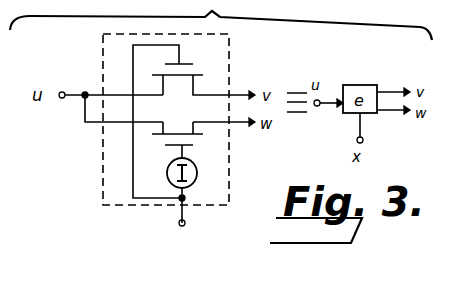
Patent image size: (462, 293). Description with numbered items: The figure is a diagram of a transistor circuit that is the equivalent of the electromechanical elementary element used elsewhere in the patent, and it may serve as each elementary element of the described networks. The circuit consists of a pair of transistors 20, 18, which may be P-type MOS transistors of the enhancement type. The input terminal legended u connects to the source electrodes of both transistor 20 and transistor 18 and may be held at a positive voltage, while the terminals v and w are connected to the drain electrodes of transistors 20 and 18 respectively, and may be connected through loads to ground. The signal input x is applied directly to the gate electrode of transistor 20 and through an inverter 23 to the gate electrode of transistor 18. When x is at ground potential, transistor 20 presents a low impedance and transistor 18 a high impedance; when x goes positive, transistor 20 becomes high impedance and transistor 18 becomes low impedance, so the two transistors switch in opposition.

The transistor 20 is at (195, 76).
The transistor 18 is at (197, 145).
The inverter 23 is at (167, 170).